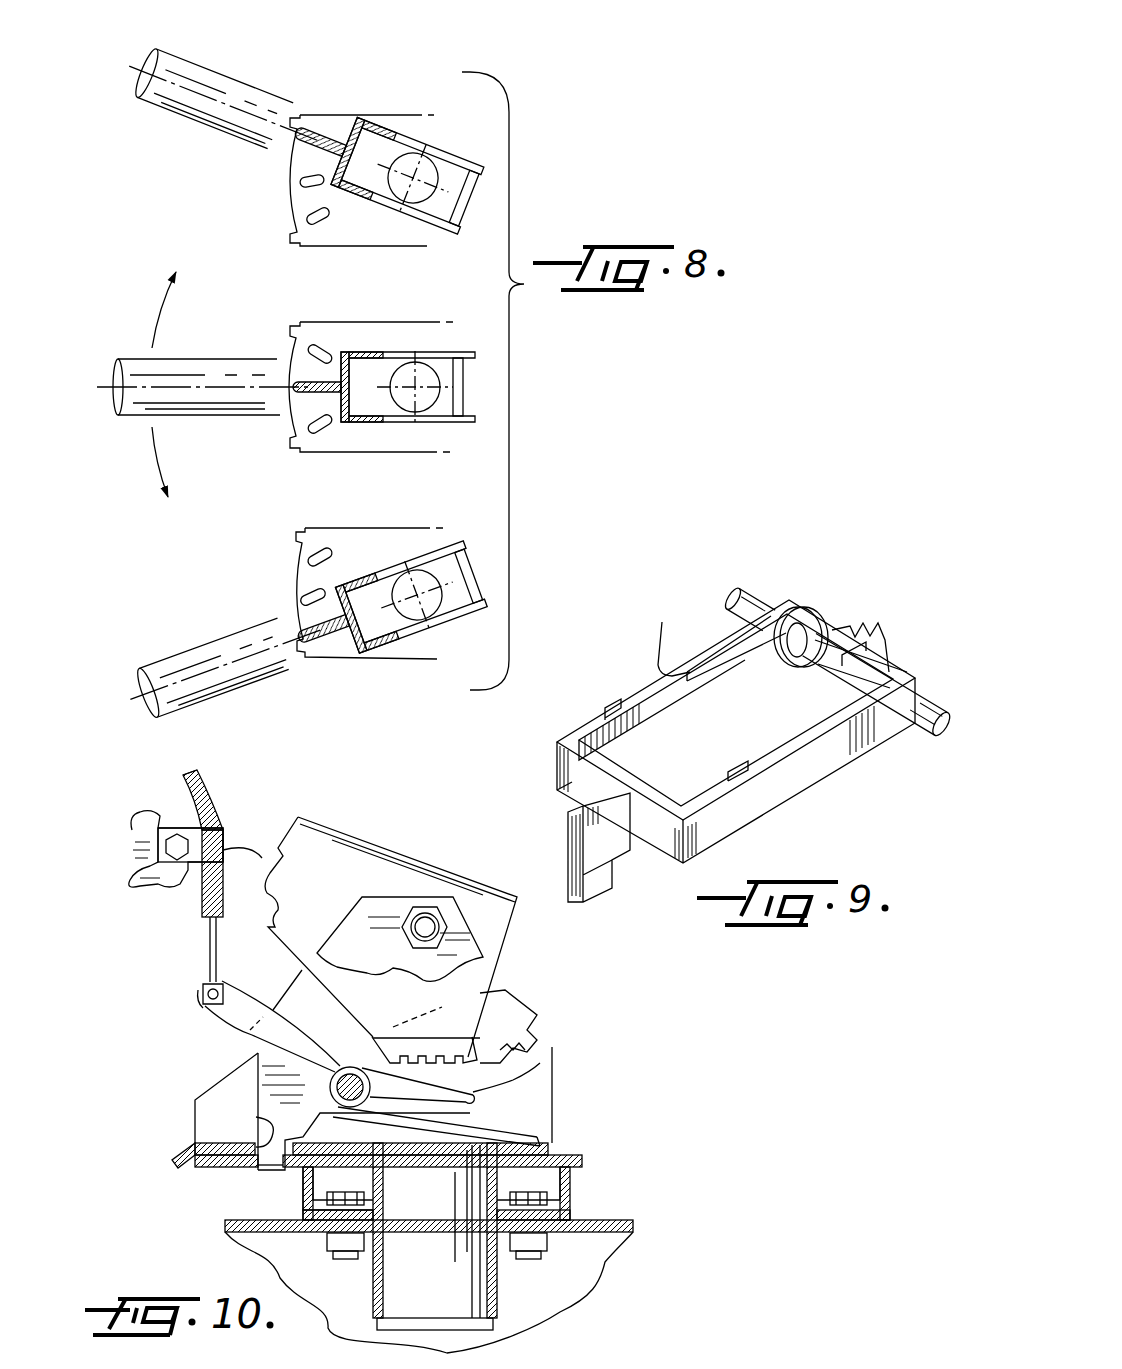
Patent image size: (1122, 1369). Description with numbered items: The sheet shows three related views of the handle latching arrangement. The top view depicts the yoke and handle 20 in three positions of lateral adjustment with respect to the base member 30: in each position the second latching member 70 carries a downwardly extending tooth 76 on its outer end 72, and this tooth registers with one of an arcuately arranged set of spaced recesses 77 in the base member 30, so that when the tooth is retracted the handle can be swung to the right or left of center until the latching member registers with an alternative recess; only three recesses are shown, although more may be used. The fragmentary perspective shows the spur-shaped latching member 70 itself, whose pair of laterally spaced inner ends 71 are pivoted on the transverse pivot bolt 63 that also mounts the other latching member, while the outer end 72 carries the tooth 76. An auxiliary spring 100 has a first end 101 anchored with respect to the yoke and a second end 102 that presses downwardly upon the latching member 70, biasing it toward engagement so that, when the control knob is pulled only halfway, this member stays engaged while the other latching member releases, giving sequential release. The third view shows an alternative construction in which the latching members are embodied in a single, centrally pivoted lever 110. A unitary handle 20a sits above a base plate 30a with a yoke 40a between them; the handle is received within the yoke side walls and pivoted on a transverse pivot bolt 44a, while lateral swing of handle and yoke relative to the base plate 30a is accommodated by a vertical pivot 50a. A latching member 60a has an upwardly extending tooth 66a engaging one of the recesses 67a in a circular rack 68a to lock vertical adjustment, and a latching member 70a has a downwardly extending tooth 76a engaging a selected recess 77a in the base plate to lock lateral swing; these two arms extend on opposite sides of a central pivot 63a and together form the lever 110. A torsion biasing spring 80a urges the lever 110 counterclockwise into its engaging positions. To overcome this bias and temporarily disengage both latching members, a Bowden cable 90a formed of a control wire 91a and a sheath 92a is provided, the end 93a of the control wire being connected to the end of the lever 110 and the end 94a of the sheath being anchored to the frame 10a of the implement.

In FIG. 8, the handle 20 is at (190, 129).
In FIG. 8, the base member 30 is at (286, 209).
In FIG. 8, the second latching member 70 is at (403, 127).
In FIG. 9, the second latching member 70 is at (805, 788).
In FIG. 8, the tooth 76 is at (313, 140).
In FIG. 9, the tooth 76 is at (606, 892).
In FIG. 8, the recesses 77 is at (327, 350).
In FIG. 9, the inner ends 71 is at (800, 608).
In FIG. 9, the outer end 72 is at (572, 788).
In FIG. 9, the pivot bolt 63 is at (832, 678).
In FIG. 9, the auxiliary spring 100 is at (822, 612).
In FIG. 9, the first end 101 is at (882, 640).
In FIG. 9, the second end 102 is at (662, 660).
In FIG. 10, the frame 10a is at (142, 870).
In FIG. 10, the unitary handle 20a is at (403, 845).
In FIG. 10, the base plate 30a is at (592, 1157).
In FIG. 10, the yoke 40a is at (193, 1088).
In FIG. 10, the pivot bolt 44a is at (432, 927).
In FIG. 10, the vertical pivot 50a is at (497, 1273).
In FIG. 10, the latching member 60a is at (530, 1062).
In FIG. 10, the central pivot 63a is at (351, 1067).
In FIG. 10, the tooth 66a is at (453, 1053).
In FIG. 10, the recesses 67a is at (530, 1058).
In FIG. 10, the circular rack 68a is at (513, 1000).
In FIG. 10, the latching member 70a is at (256, 1054).
In FIG. 10, the tooth 76a is at (275, 1172).
In FIG. 10, the recess 77a is at (270, 1130).
In FIG. 10, the biasing spring 80a is at (505, 1122).
In FIG. 10, the Bowden cable 90a is at (208, 778).
In FIG. 10, the control wire 91a is at (208, 945).
In FIG. 10, the sheath 92a is at (216, 813).
In FIG. 10, the end of the control wire 93a is at (199, 1001).
In FIG. 10, the end of the sheath 94a is at (223, 850).
In FIG. 10, the lever 110 is at (303, 1017).